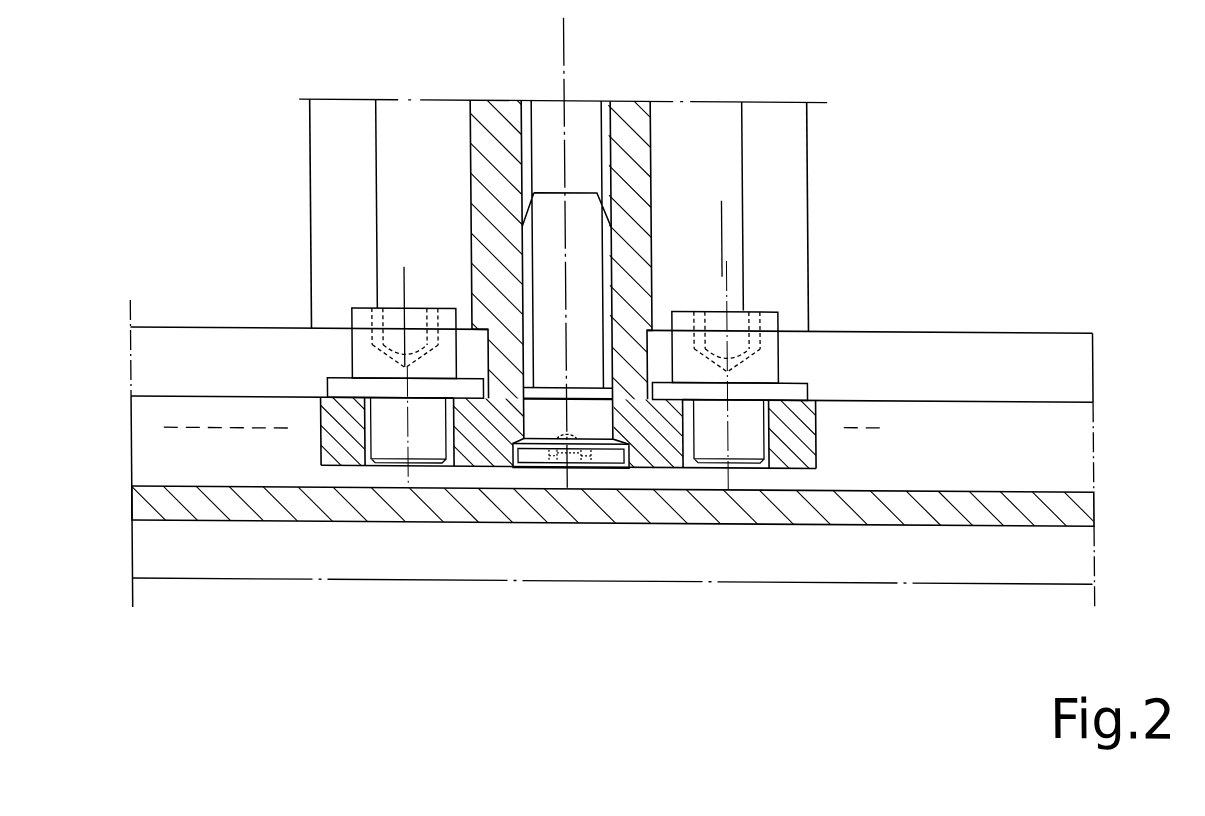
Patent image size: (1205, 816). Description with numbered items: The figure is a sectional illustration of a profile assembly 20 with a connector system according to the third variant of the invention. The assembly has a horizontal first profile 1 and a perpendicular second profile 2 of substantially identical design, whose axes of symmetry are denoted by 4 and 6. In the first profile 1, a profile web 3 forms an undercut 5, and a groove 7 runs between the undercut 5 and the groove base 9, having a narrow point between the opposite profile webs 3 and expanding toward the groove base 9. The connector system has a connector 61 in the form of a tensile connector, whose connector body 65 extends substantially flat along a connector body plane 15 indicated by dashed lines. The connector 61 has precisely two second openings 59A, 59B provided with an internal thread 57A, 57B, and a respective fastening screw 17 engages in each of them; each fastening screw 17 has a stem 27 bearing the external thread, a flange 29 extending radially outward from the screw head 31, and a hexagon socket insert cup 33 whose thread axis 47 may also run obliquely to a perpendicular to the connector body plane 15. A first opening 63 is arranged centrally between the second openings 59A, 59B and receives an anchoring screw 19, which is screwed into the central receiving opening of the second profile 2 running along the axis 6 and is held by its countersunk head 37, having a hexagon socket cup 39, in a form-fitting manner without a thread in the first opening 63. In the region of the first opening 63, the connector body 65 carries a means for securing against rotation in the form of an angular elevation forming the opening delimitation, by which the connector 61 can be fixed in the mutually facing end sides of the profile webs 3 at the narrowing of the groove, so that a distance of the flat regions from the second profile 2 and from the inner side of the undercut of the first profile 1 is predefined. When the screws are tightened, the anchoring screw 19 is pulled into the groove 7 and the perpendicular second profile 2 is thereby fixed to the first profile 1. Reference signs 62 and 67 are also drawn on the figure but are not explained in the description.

The first profile 1 is at (979, 327).
The second profile 2 is at (810, 121).
The profile web 3 is at (1050, 352).
The axis of symmetry 4 is at (1080, 581).
The undercut 5 is at (1053, 397).
The axis of symmetry 6 is at (566, 17).
The groove 7 is at (1040, 441).
The groove base 9 is at (1053, 486).
The connector body plane 15 is at (880, 423).
The fastening screw 17 is at (363, 345).
The anchoring screw 19 is at (547, 251).
The profile assembly 20 is at (990, 101).
The stem 27 is at (710, 438).
The flange 29 is at (792, 386).
The screw head 31 is at (685, 322).
The hexagon socket insert cup 33 is at (738, 306).
The countersunk head 37 is at (607, 454).
The hexagon socket cup 39 is at (562, 452).
The thread axis 47 is at (722, 223).
The internal thread 57A is at (455, 428).
The internal thread 57B is at (767, 437).
The second opening 59A is at (447, 456).
The second opening 59B is at (770, 456).
The connector 61 is at (290, 475).
The direction arrow 62 is at (308, 354).
The first opening 63 is at (623, 454).
The connector body 65 is at (663, 449).
The sleeve wall 67 is at (633, 317).